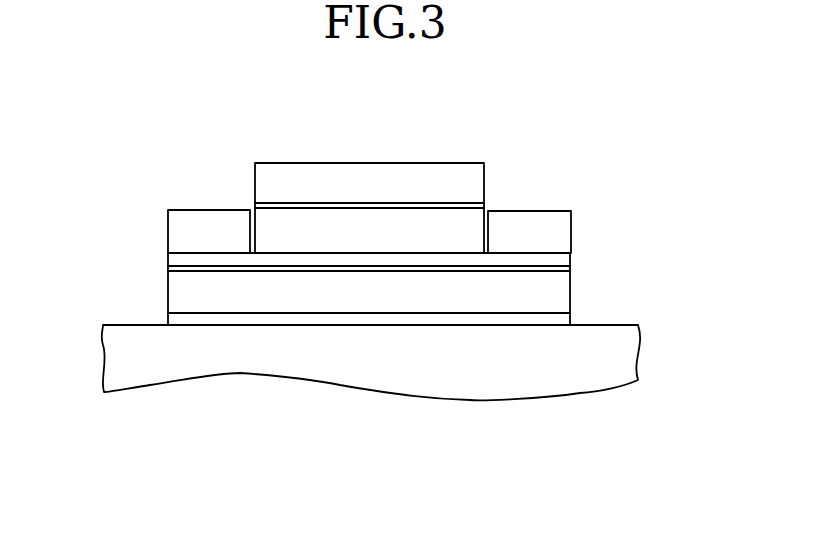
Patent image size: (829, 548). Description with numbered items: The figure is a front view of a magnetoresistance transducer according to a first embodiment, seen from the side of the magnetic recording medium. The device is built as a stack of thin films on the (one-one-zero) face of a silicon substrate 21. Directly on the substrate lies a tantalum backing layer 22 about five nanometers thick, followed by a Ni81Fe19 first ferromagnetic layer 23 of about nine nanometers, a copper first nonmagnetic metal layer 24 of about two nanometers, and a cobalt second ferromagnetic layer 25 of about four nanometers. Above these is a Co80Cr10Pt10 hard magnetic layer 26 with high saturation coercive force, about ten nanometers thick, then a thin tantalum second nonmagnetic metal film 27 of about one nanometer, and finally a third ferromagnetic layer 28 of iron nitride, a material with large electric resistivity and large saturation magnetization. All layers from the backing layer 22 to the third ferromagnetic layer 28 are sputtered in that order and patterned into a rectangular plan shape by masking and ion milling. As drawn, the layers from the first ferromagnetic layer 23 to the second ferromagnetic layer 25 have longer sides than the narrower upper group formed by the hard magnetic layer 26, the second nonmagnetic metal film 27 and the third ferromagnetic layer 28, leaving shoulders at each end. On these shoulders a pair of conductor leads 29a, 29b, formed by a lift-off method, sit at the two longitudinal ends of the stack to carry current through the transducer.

The silicon substrate 21 is at (225, 368).
The backing layer 22 is at (390, 318).
The first ferromagnetic layer 23 is at (557, 298).
The first nonmagnetic metal layer 24 is at (168, 268).
The second ferromagnetic layer 25 is at (560, 258).
The hard magnetic layer 26 is at (437, 224).
The second nonmagnetic metal film 27 is at (380, 203).
The third ferromagnetic layer 28 is at (253, 180).
The conductor lead 29a is at (168, 228).
The conductor lead 29b is at (572, 227).